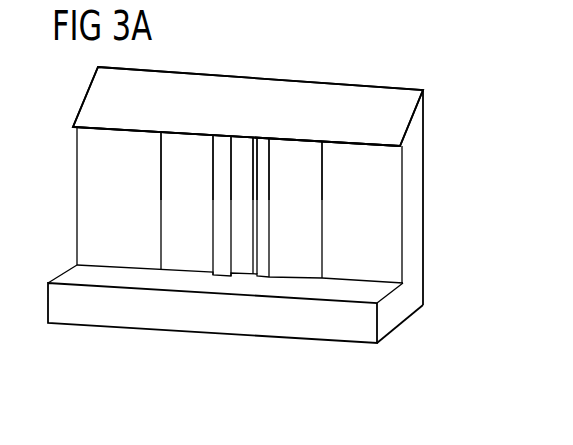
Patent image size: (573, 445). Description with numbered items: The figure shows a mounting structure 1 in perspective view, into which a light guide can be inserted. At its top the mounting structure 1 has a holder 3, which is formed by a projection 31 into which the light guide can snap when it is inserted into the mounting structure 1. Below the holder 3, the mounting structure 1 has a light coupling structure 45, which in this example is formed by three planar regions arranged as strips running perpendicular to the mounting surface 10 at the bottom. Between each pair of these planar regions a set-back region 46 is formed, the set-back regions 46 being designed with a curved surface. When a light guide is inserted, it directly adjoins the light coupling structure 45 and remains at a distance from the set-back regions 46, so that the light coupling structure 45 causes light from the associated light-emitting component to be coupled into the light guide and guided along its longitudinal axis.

The mounting structure 1 is at (462, 104).
The holder 3 is at (402, 143).
The projection 31 is at (393, 148).
The mounting surface 10 is at (407, 325).
The light coupling structure 45 is at (194, 153).
The set-back region 46 is at (327, 280).